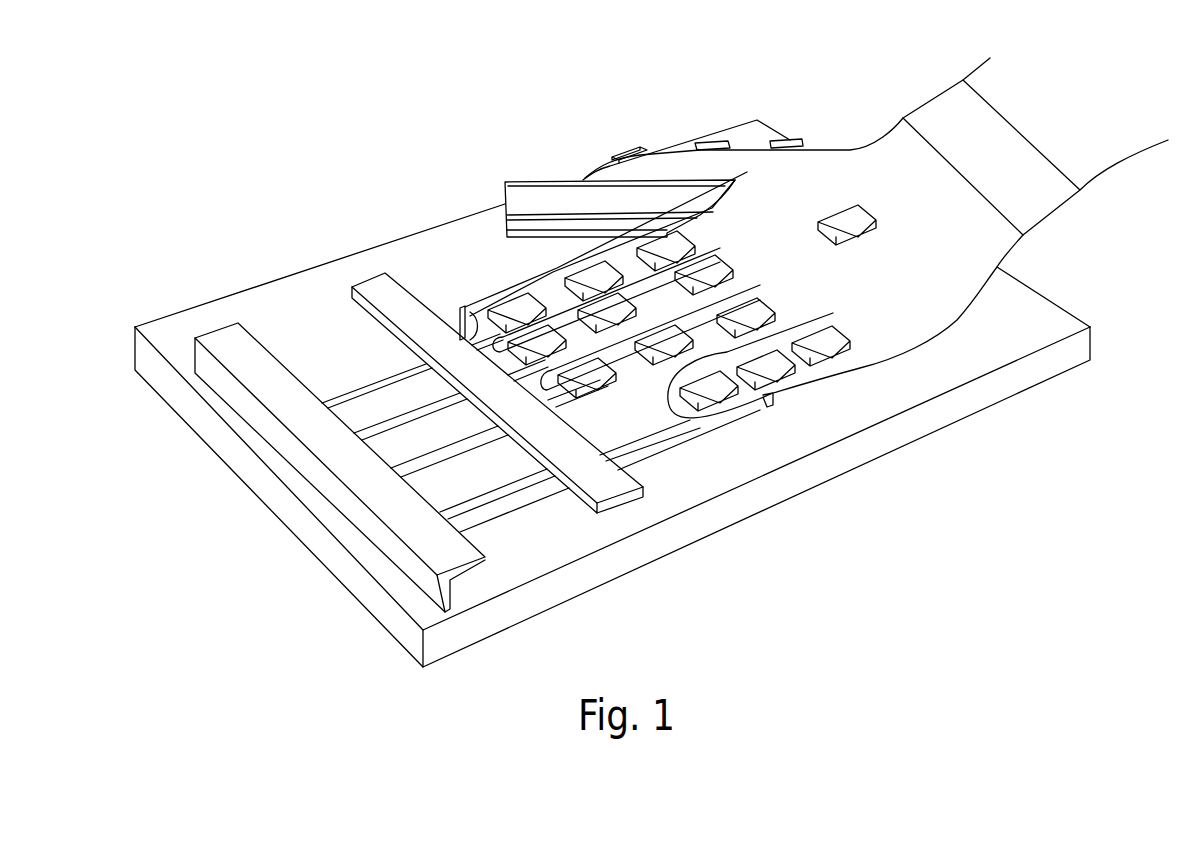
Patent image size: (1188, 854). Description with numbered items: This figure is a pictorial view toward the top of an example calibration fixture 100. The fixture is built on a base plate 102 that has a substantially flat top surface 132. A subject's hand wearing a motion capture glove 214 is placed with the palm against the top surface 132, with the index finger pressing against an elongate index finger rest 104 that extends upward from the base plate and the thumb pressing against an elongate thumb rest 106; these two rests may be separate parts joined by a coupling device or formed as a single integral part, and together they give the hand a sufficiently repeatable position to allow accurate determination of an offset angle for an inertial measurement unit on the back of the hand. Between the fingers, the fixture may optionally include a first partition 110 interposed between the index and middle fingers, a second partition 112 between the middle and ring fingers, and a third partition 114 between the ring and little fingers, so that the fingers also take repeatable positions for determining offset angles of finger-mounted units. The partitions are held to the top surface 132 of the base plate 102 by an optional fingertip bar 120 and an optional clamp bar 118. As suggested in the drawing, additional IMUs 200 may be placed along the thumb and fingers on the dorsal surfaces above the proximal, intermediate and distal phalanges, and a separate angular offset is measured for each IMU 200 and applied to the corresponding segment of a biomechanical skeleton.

The calibration fixture 100 is at (310, 116).
The base plate 102 is at (768, 506).
The index finger rest 104 is at (485, 298).
The thumb rest 106 is at (542, 180).
The first partition 110 is at (348, 400).
The second partition 112 is at (378, 434).
The third partition 114 is at (433, 477).
The clamp bar 118 is at (478, 553).
The fingertip bar 120 is at (642, 487).
The top surface 132 is at (393, 260).
The IMU 200 is at (875, 320).
The motion capture glove 214 is at (887, 123).